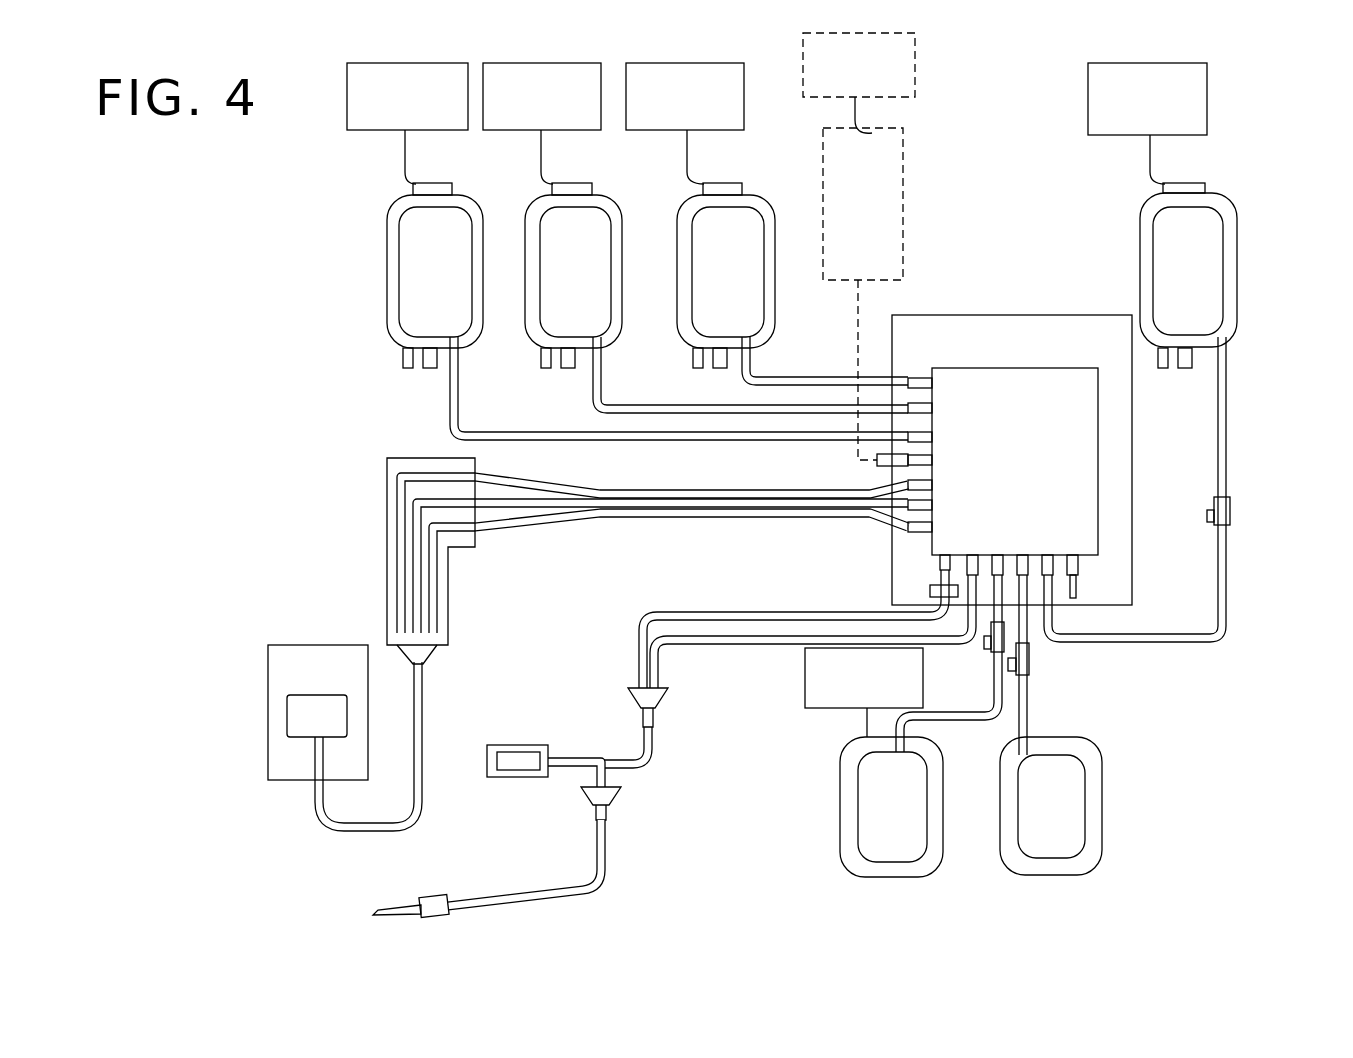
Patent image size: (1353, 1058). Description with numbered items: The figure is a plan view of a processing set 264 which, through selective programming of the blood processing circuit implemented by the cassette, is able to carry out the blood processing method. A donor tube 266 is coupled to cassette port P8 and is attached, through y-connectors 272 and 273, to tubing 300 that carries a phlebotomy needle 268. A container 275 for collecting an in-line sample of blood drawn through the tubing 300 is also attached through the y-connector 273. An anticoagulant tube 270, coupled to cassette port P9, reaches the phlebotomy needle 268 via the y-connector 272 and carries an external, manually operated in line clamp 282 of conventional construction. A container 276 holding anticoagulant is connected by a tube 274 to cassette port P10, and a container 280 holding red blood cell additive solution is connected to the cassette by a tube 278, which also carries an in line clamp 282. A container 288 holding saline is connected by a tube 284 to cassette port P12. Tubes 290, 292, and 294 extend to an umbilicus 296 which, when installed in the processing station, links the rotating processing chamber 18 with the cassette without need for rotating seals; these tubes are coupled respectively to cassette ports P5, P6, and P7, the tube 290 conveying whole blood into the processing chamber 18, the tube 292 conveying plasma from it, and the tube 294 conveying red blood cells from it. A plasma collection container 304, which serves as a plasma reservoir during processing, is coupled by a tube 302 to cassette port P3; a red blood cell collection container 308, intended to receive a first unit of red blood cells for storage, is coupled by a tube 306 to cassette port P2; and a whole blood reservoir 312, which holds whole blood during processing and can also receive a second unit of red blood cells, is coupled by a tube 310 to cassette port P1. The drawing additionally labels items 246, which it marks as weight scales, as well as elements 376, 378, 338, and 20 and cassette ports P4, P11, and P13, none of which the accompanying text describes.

The weight scale 246 is at (562, 64).
The plasma collection container 304 is at (450, 243).
The red blood cell collection container 308 is at (598, 238).
The whole blood reservoir 312 is at (740, 232).
The optional fluid container 376 is at (897, 160).
The processing set 264 is at (934, 240).
The container holding saline 288 is at (1168, 240).
The optional fluid line 378 is at (858, 340).
The tube 310 is at (780, 386).
The tube 306 is at (602, 400).
The tube 302 is at (458, 412).
The cassette / manifold 338 is at (420, 458).
The tube 292 is at (638, 492).
The tube 290 is at (758, 498).
The tube 294 is at (688, 518).
The in line clamp 282 is at (1004, 635).
The donor tube 266 is at (745, 612).
The anticoagulant tube 270 is at (705, 645).
The processing chamber 18 is at (305, 712).
The separator housing 20 is at (290, 760).
The umbilicus 296 is at (425, 700).
The container 275 is at (518, 760).
The y-connector 272 is at (660, 715).
The y-connector 273 is at (612, 800).
The tubing 300 is at (608, 858).
The phlebotomy needle 268 is at (398, 904).
The container holding anticoagulant 276 is at (882, 800).
The container holding red blood cell additive solution 280 is at (1060, 812).
The tube 274 is at (963, 723).
The tube 278 is at (1028, 703).
The tube 284 is at (1152, 640).
The cassette port P1 is at (932, 383).
The cassette port P2 is at (932, 408).
The cassette port P3 is at (932, 437).
The port P4 is at (932, 460).
The cassette port P5 is at (932, 485).
The cassette port P6 is at (932, 505).
The cassette port P7 is at (932, 527).
The cassette port P8 is at (940, 566).
The cassette port P9 is at (967, 568).
The cassette port P10 is at (998, 555).
The port P11 is at (1022, 555).
The cassette port P12 is at (1048, 555).
The port P13 is at (1078, 565).